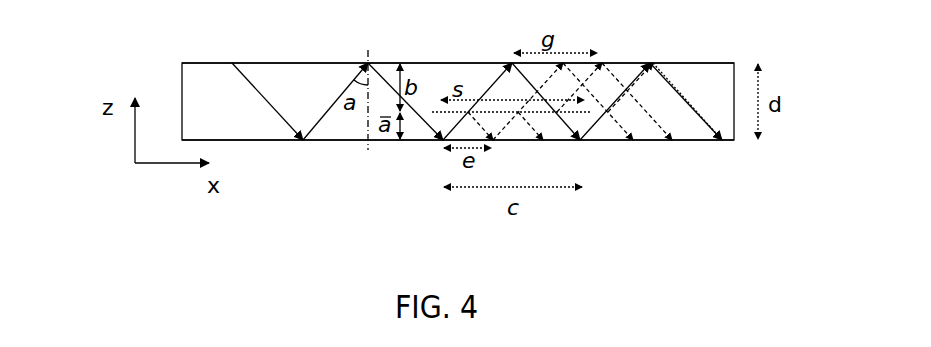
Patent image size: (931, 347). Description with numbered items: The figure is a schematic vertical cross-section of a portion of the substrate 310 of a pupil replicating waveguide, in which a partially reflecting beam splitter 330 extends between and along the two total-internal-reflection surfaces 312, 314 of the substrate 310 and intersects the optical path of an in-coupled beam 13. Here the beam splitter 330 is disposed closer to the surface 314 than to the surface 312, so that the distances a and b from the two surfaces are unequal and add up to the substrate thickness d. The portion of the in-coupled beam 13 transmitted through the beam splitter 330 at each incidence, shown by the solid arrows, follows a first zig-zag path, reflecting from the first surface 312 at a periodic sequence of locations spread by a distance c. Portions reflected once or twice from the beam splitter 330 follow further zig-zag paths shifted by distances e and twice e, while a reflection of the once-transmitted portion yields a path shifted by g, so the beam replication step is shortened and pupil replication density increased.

The in-coupled beam 13 is at (270, 108).
The substrate 310 is at (696, 62).
The first TIR surface 312 is at (281, 58).
The second TIR surface 314 is at (235, 144).
The beam splitter 330 is at (613, 79).